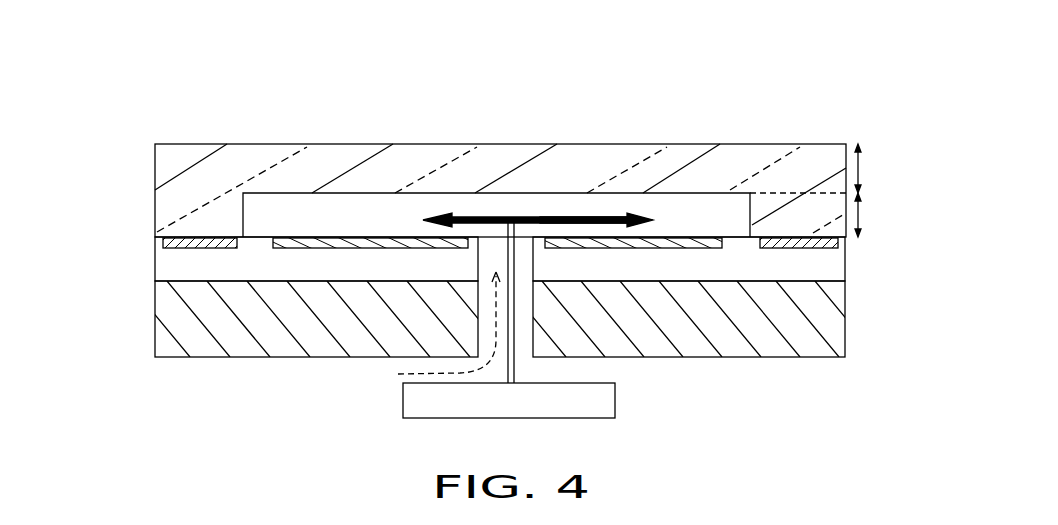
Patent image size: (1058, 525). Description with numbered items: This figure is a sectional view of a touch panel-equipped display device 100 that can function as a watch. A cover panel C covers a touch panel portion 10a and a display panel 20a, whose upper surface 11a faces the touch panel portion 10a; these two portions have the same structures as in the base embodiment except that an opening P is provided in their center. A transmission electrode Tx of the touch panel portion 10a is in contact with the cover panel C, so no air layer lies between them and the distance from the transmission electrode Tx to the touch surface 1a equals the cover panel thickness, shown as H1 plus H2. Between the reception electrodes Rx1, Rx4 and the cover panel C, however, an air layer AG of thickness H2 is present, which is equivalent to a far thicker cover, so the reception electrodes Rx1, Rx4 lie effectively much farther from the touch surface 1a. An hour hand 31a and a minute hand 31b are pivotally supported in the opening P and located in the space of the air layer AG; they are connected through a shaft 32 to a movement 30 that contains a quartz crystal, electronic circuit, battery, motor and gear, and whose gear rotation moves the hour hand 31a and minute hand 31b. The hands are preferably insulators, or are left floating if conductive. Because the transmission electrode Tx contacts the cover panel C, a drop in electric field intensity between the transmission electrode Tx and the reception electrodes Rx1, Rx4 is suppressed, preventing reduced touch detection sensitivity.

The touch panel-equipped display device 100 is at (530, 25).
The touch surface 1a is at (323, 144).
The cover panel C is at (155, 170).
The air layer AG is at (307, 226).
The transmission electrode Tx is at (223, 237).
The reception electrode Rx1 is at (357, 237).
The reception electrode Rx4 is at (657, 237).
The hour hand 31a is at (458, 218).
The minute hand 31b is at (565, 218).
The thickness H1 is at (872, 168).
The thickness H2 is at (872, 215).
The touch panel portion 10a is at (152, 237).
The display panel 20a is at (152, 281).
The upper surface of substrate 11a is at (235, 272).
The opening P is at (441, 328).
The movement 30 is at (615, 393).
The shaft 32 is at (515, 372).